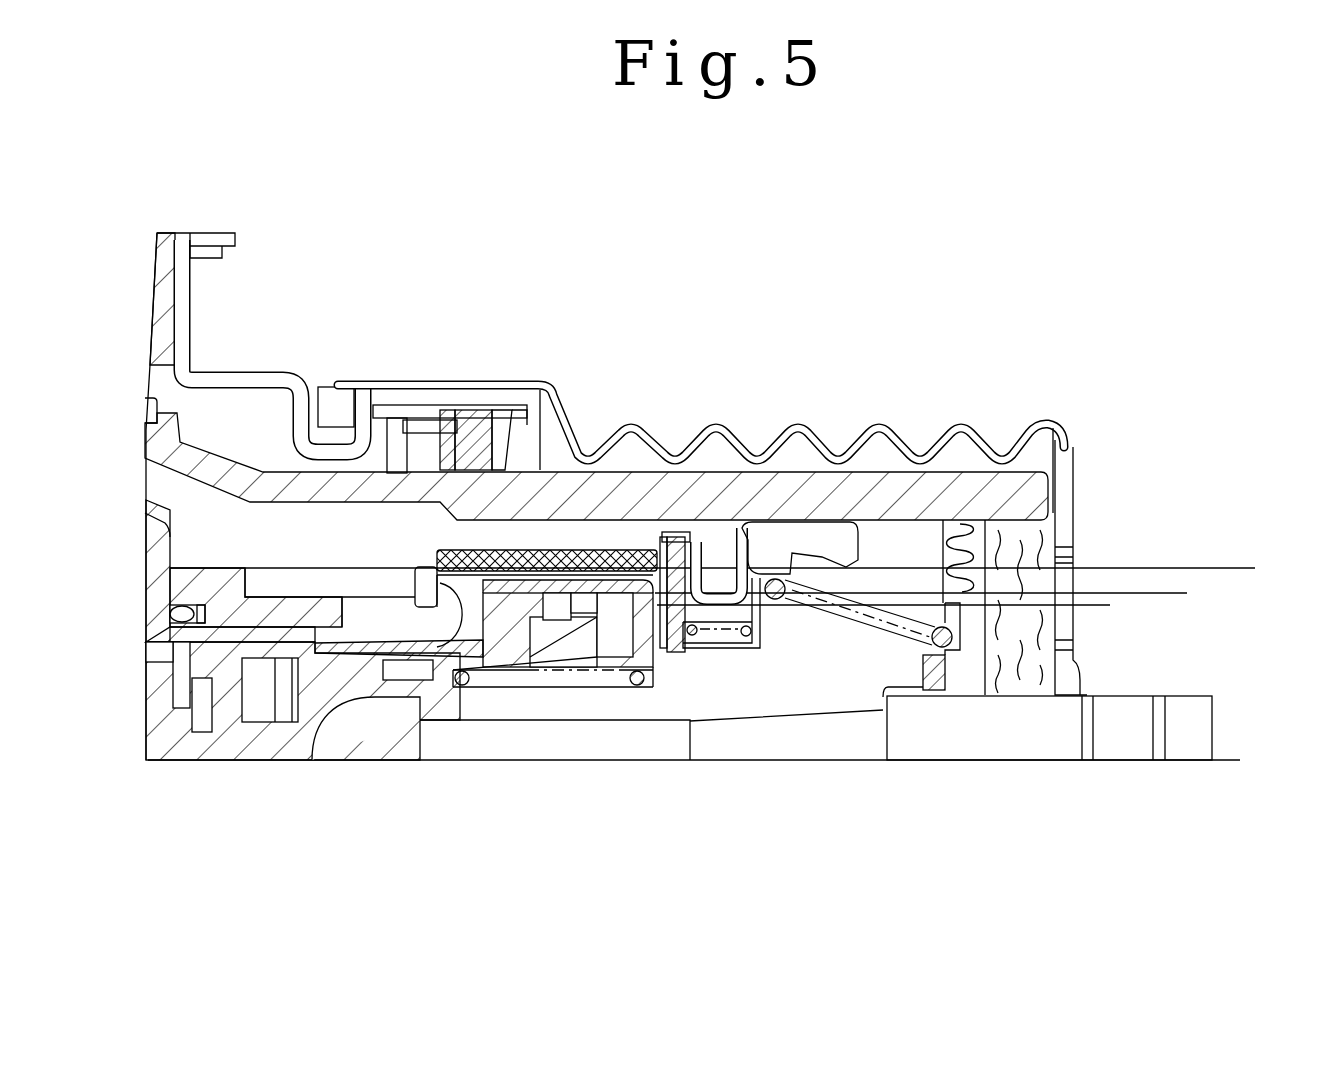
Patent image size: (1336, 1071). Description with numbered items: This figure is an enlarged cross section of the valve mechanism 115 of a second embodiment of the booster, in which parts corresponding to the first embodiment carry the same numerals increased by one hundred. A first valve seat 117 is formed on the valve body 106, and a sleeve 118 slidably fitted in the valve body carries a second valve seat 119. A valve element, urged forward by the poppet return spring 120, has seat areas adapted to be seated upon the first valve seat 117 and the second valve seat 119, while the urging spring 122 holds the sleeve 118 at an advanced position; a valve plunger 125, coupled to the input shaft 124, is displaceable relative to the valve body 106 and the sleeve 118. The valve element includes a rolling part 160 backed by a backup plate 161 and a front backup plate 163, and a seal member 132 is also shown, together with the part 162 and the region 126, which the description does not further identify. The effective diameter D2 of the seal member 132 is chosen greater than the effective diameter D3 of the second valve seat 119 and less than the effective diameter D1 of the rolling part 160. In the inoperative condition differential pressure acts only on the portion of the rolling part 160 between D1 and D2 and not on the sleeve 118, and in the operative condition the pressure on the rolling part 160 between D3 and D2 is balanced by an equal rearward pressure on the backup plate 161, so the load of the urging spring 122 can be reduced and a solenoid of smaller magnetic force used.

The valve body 106 is at (890, 492).
The valve mechanism 115 is at (720, 537).
The first valve seat 117 is at (403, 587).
The sleeve 118 is at (370, 647).
The second valve seat 119 is at (657, 600).
The poppet return spring 120 is at (745, 650).
The urging spring 122 is at (565, 690).
The input shaft 124 is at (1197, 728).
The valve plunger 125 is at (238, 745).
The chamber 126 is at (310, 552).
The seal member 132 is at (567, 590).
The rolling part 160 is at (723, 650).
The backup plate 161 is at (717, 585).
The friction member 162 is at (503, 548).
The front backup plate 163 is at (450, 690).
The effective diameter of the rolling part D1 is at (1232, 572).
The effective diameter of the seal member D2 is at (1165, 598).
The effective diameter of the second valve seat D3 is at (1103, 609).